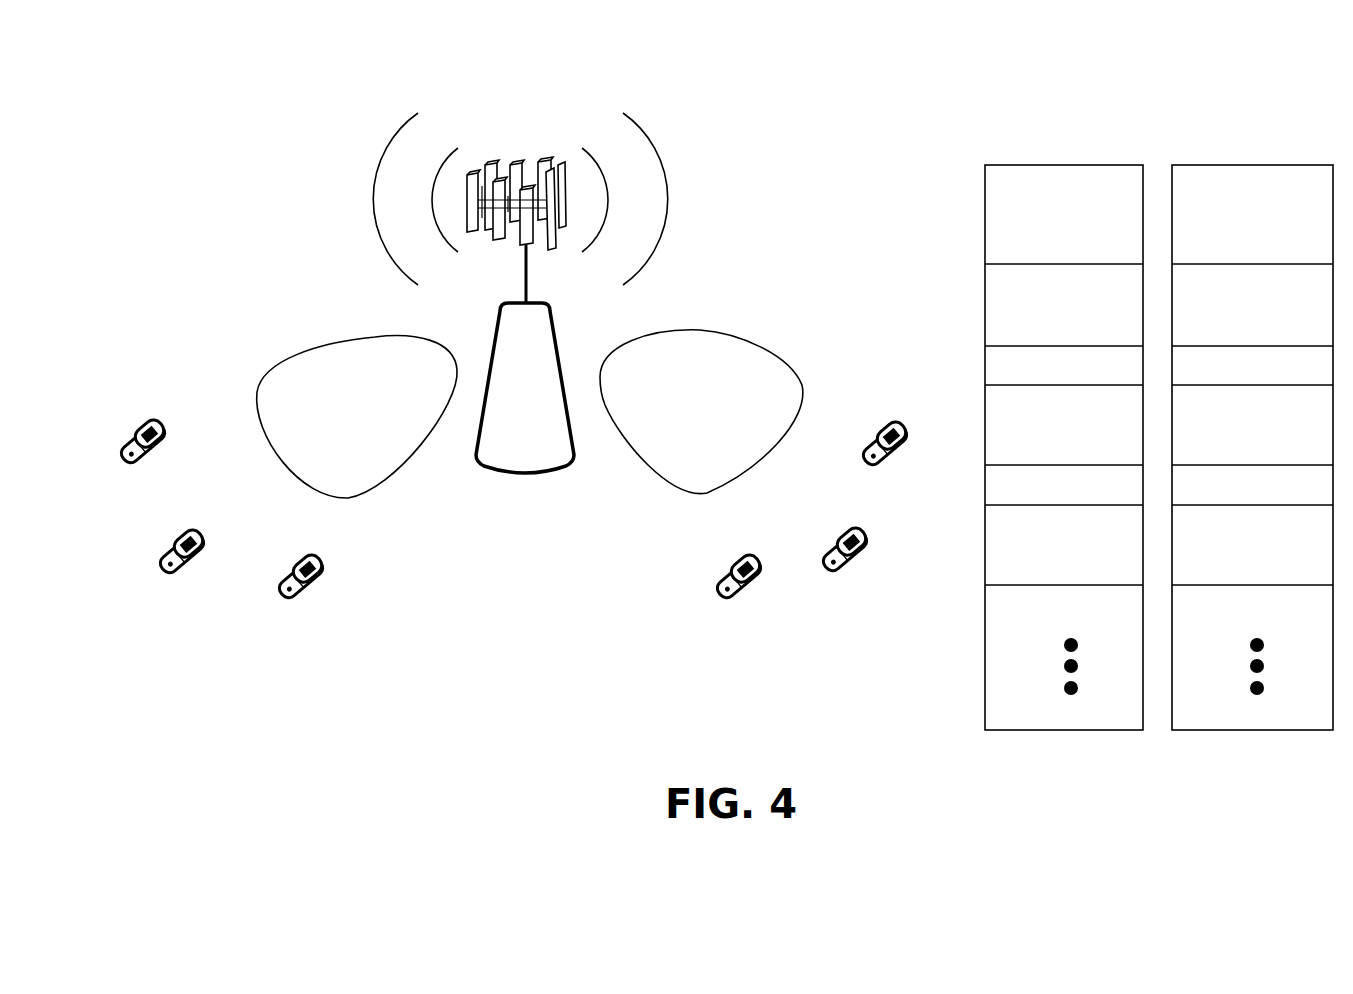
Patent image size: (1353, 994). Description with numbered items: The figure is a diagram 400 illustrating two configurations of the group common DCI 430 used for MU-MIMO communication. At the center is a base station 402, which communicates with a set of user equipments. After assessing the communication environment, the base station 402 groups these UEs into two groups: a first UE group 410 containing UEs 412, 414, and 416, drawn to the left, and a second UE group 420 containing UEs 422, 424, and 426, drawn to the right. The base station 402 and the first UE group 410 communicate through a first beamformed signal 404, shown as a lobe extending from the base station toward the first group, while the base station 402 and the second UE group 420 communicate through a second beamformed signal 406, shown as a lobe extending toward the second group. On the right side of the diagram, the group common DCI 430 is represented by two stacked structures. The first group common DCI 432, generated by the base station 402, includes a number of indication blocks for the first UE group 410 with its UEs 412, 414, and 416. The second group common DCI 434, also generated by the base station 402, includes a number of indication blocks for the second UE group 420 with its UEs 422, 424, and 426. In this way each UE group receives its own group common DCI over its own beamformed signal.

The diagram 400 is at (213, 91).
The base station 402 is at (557, 319).
The first beamformed signal 404 is at (358, 333).
The second beamformed signal 406 is at (690, 325).
The first UE group 410 is at (138, 356).
The UE 412 is at (155, 428).
The UE 414 is at (194, 535).
The UE 416 is at (316, 559).
The second UE group 420 is at (878, 347).
The UE 422 is at (899, 427).
The UE 424 is at (858, 533).
The UE 426 is at (752, 559).
The group common DCI 430 is at (1192, 111).
The first group common DCI 432 is at (1072, 165).
The second group common DCI 434 is at (1237, 165).